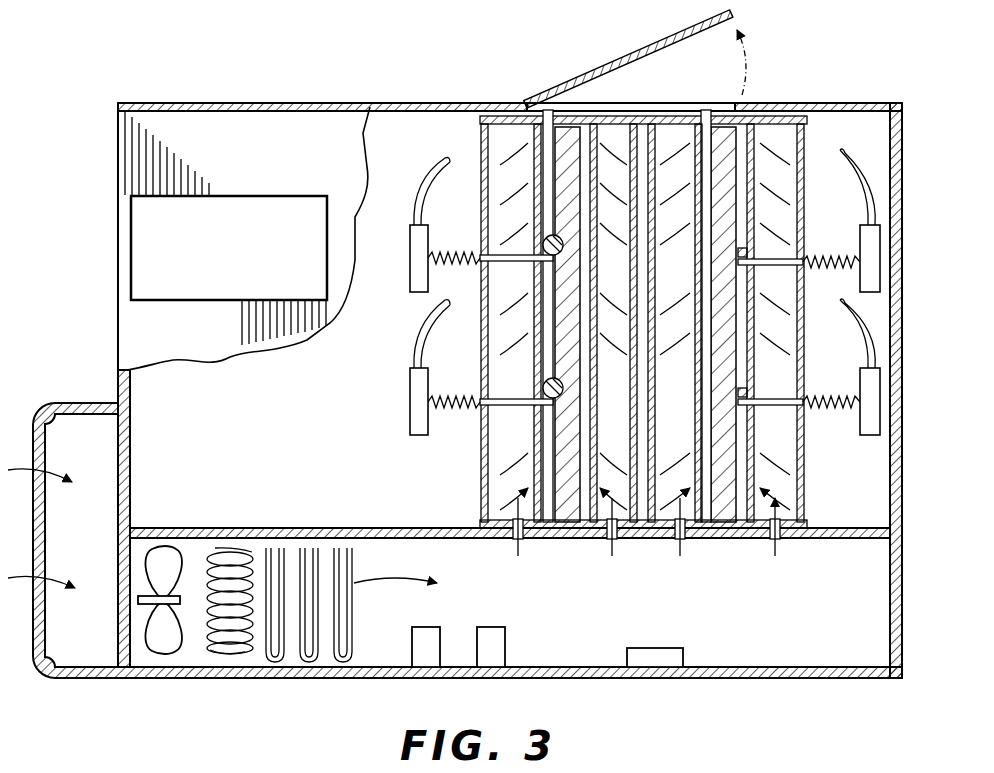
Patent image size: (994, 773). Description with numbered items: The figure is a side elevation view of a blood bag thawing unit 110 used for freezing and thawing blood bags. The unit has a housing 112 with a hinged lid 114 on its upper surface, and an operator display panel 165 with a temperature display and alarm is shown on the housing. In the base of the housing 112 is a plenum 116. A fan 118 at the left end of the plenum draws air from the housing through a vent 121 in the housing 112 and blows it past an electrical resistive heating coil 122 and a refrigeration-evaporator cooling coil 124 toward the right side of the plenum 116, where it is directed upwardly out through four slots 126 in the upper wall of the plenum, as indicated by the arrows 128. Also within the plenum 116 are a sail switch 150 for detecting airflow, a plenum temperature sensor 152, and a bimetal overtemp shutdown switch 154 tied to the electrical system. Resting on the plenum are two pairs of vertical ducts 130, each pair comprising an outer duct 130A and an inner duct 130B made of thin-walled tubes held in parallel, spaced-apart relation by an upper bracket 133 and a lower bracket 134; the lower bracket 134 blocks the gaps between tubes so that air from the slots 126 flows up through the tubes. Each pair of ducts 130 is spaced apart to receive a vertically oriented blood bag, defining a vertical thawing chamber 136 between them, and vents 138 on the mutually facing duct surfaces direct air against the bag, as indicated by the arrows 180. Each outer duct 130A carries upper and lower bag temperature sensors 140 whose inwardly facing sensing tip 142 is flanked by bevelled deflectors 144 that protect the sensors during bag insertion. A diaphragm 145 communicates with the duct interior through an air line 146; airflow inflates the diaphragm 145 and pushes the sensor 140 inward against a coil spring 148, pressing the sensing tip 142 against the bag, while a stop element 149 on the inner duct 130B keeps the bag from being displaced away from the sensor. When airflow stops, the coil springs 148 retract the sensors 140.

The blood bag thawing unit 110 is at (122, 57).
The housing 112 is at (780, 103).
The hinged lid 114 is at (672, 44).
The plenum 116 is at (808, 630).
The fan 118 is at (163, 640).
The vent 121 is at (45, 455).
The heating coil 122 is at (228, 668).
The cooling coil 124 is at (305, 668).
The slots 126 is at (522, 539).
The arrows 128 is at (518, 556).
The vertical ducts 130 is at (719, 62).
The outer duct 130A is at (505, 136).
The inner duct 130B is at (643, 124).
The upper bracket 133 is at (808, 102).
The lower bracket 134 is at (481, 523).
The vertical thawing chamber 136 is at (548, 116).
The vents 138 is at (594, 280).
The bag temperature sensors 140 is at (490, 262).
The sensing tip 142 is at (543, 245).
The deflectors 144 is at (746, 266).
The diaphragm 145 is at (428, 250).
The air line 146 is at (432, 180).
The coil spring 148 is at (450, 258).
The stop element 149 is at (712, 255).
The sail switch 150 is at (677, 650).
The plenum temperature sensor 152 is at (490, 655).
The bimetal overtemp shutdown switch 154 is at (430, 655).
The operator display panel 165 is at (200, 300).
The arrows 180 is at (490, 337).